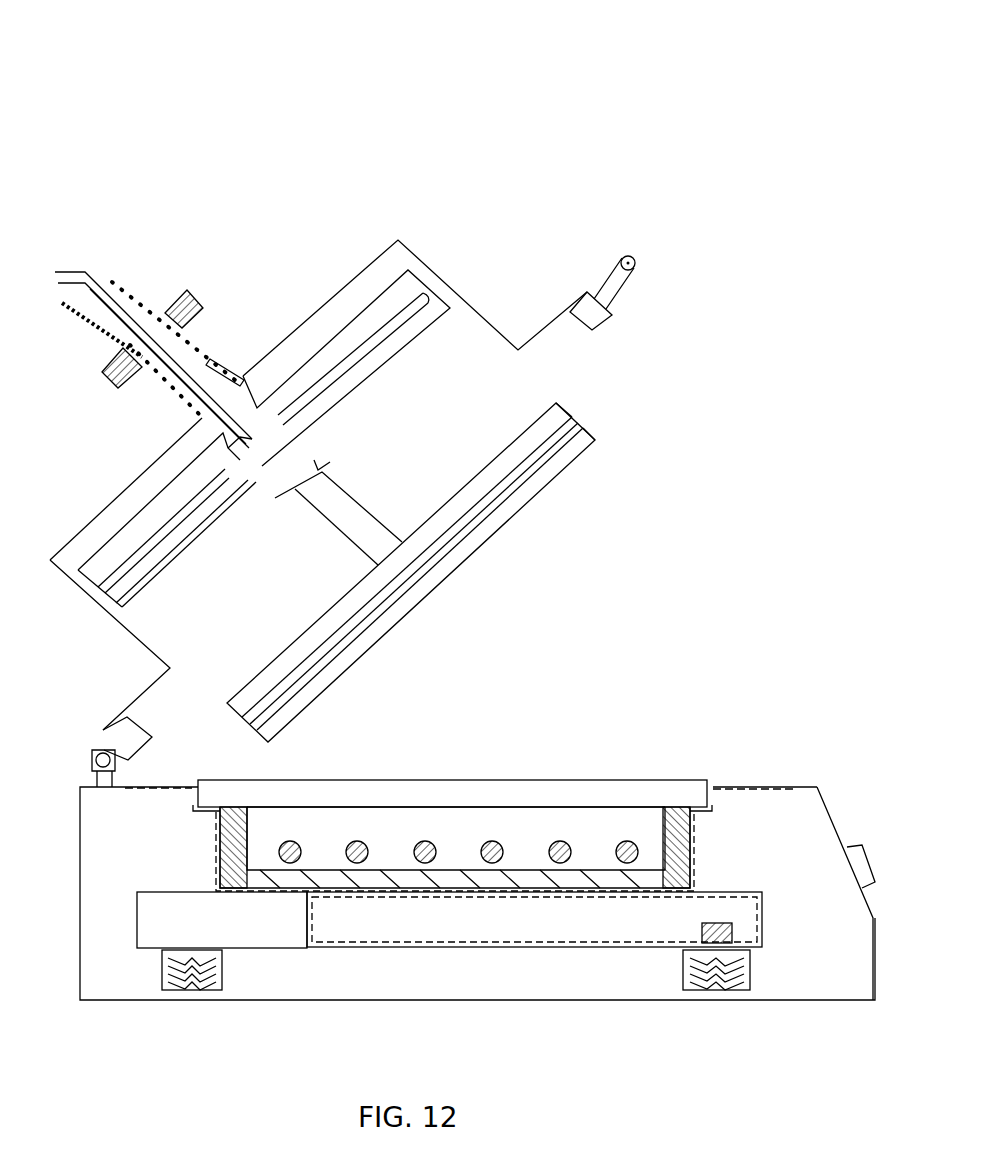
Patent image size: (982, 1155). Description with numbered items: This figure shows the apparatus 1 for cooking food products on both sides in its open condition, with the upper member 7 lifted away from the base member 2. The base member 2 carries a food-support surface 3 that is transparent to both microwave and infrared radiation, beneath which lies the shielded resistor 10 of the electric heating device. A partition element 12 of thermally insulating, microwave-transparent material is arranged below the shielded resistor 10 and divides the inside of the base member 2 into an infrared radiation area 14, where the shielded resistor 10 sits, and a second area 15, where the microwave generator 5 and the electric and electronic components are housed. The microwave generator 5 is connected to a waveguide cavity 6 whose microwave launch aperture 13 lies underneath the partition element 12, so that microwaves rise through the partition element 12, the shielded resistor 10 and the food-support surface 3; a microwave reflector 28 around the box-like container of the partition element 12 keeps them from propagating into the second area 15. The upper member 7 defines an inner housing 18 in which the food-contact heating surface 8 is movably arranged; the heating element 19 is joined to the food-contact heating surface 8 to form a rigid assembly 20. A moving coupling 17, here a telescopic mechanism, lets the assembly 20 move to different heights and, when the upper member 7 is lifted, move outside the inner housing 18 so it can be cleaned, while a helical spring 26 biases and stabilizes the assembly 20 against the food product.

The apparatus 1 is at (600, 92).
The base member 2 is at (803, 787).
The food-support surface 3 is at (557, 792).
The microwave generator 5 is at (168, 970).
The waveguide cavity 6 is at (588, 913).
The upper member 7 is at (352, 276).
The food-contact heating surface 8 is at (537, 482).
The shielded resistor 10 is at (492, 848).
The partition element 12 is at (235, 818).
The microwave launch aperture 13 is at (345, 895).
The infrared radiation area 14 is at (393, 830).
The second area 15 is at (830, 927).
The moving coupling 17 is at (237, 335).
The inner housing 18 is at (103, 527).
The heating element 19 is at (568, 415).
The assembly 20 is at (598, 418).
The helical spring 26 is at (150, 372).
The microwave reflector 28 is at (217, 860).